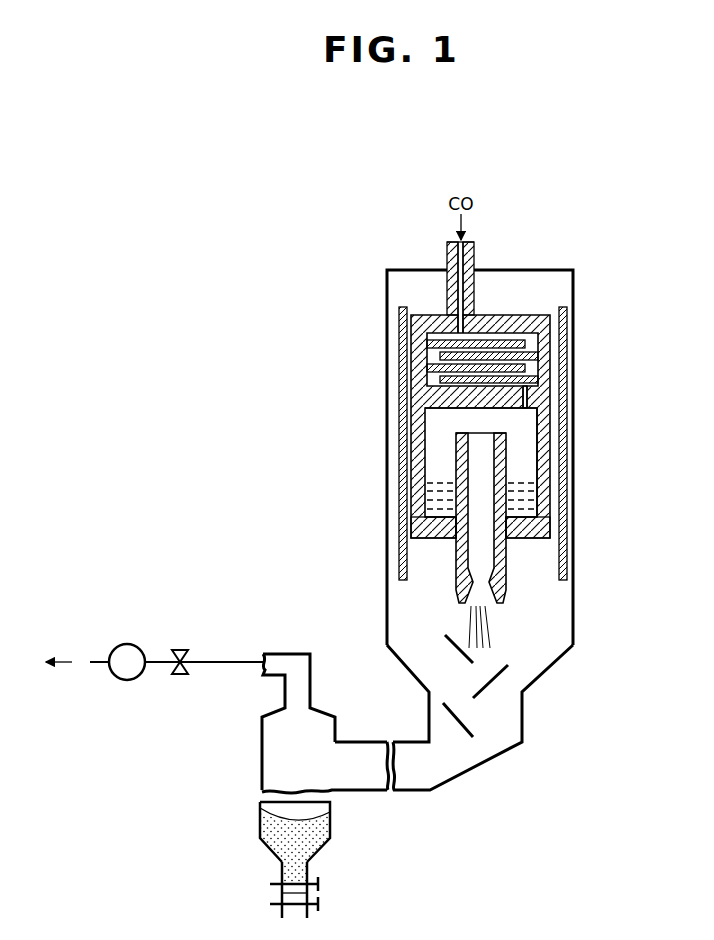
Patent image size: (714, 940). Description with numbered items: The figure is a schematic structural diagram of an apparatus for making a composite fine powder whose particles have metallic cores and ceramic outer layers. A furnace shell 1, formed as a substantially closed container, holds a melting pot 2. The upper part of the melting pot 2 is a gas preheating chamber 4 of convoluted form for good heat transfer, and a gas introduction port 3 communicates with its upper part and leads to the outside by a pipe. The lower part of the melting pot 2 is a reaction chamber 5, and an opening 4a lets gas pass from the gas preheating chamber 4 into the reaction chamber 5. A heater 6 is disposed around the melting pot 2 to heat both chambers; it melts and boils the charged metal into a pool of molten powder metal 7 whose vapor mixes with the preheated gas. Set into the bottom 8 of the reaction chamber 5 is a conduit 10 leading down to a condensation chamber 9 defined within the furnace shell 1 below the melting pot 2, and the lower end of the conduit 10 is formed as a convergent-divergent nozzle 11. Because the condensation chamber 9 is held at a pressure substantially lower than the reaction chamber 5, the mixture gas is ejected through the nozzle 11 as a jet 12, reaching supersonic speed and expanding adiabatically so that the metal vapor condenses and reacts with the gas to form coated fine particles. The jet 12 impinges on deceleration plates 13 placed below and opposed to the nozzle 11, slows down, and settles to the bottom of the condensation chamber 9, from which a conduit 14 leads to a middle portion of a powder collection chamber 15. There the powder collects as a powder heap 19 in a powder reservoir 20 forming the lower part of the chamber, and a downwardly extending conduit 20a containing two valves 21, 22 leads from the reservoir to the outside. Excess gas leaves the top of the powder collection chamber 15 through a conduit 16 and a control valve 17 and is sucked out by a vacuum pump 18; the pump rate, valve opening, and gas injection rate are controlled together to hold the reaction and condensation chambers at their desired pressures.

The furnace shell 1 is at (573, 290).
The melting pot 2 is at (533, 540).
The gas introduction port 3 is at (470, 253).
The gas preheating chamber 4 is at (532, 368).
The opening 4a is at (527, 397).
The reaction chamber 5 is at (522, 456).
The heater 6 is at (399, 335).
The molten powder metal 7 is at (530, 505).
The bottom 8 is at (434, 540).
The condensation chamber 9 is at (505, 635).
The conduit 10 is at (411, 459).
The convergent-divergent nozzle 11 is at (492, 588).
The jet 12 is at (469, 621).
The deceleration plates 13 is at (490, 682).
The conduit 14 is at (366, 742).
The powder collection chamber 15 is at (282, 765).
The conduit 16 is at (228, 662).
The control valve 17 is at (180, 650).
The vacuum pump 18 is at (127, 644).
The powder heap 19 is at (316, 838).
The powder reservoir 20 is at (269, 846).
The conduit 20a is at (290, 893).
The valve 21 is at (320, 882).
The valve 22 is at (320, 906).